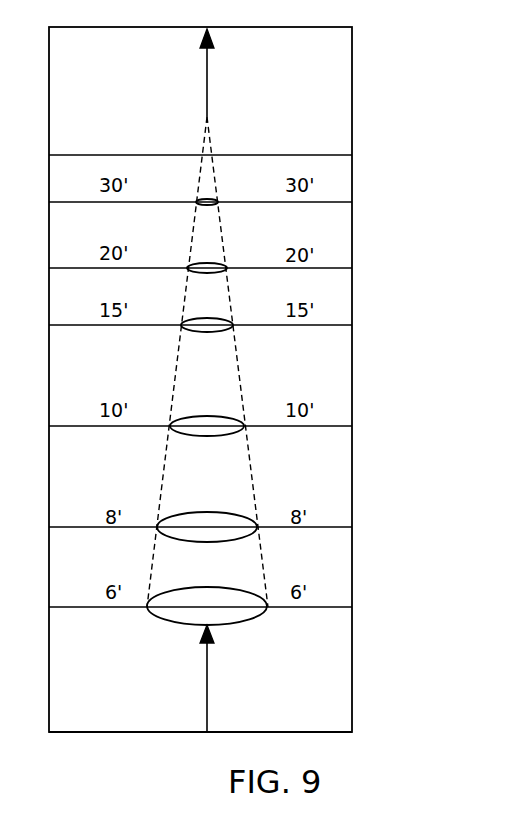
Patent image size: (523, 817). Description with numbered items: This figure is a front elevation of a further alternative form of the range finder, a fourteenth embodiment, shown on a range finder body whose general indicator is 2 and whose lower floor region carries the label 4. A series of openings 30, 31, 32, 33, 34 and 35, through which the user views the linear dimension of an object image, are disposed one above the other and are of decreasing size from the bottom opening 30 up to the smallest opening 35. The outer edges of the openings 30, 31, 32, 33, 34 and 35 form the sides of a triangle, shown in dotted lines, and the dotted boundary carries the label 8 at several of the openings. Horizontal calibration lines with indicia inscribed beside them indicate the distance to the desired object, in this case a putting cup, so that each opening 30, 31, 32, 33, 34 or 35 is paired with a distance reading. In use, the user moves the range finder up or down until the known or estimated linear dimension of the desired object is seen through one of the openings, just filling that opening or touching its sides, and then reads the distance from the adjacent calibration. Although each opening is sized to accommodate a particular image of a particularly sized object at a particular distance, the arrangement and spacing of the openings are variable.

The lighting system / beam 2 is at (412, 571).
The floor 4 is at (90, 673).
The beam boundary 8 is at (207, 362).
The opening 30 is at (216, 625).
The opening 31 is at (207, 543).
The opening 32 is at (225, 443).
The opening 33 is at (227, 344).
The opening 34 is at (225, 254).
The opening 35 is at (230, 211).